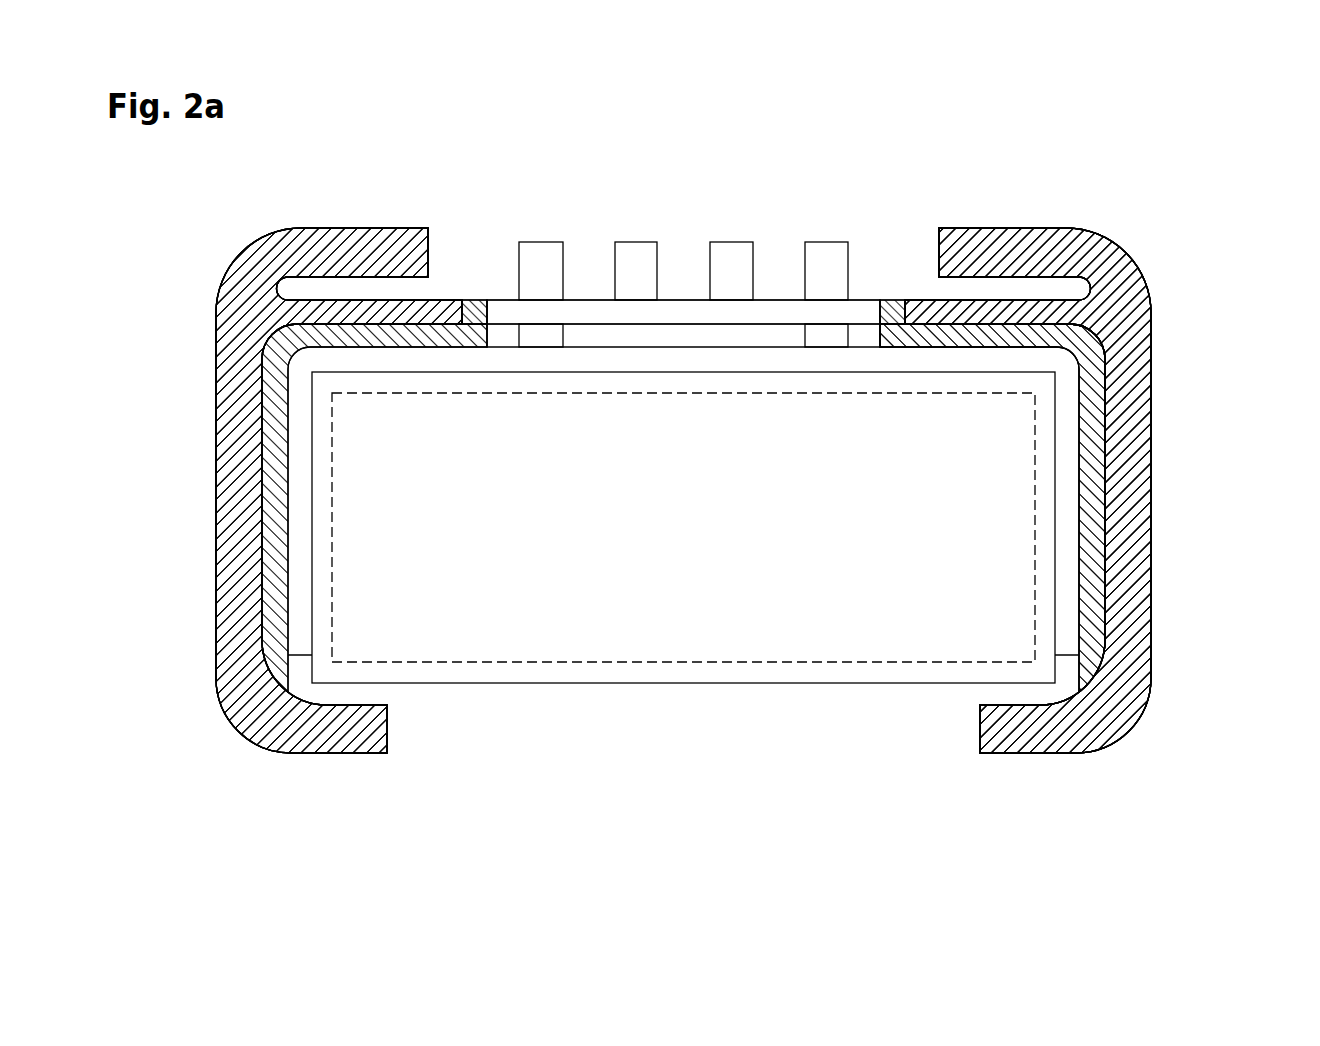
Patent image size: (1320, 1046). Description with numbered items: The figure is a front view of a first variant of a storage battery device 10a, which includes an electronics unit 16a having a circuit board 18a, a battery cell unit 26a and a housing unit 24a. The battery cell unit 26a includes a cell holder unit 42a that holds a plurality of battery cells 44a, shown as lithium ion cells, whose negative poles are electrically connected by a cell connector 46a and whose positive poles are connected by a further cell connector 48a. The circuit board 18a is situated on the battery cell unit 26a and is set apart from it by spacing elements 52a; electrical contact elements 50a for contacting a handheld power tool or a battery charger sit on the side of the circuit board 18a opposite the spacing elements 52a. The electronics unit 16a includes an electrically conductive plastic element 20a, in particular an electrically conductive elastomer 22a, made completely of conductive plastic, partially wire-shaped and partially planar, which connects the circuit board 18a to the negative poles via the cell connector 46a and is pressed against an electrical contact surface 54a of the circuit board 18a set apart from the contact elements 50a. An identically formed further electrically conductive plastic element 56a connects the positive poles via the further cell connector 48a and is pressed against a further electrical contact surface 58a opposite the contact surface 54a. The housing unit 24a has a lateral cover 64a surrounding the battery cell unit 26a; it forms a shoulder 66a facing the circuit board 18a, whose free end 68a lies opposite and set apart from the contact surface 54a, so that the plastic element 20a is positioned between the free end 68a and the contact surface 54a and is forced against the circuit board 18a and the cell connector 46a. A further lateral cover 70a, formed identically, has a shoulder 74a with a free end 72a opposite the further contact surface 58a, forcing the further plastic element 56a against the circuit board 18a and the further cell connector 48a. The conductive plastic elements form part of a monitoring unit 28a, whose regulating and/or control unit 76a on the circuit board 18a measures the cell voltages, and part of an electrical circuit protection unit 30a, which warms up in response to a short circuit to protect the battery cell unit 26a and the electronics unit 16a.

The storage battery device 10a is at (908, 228).
The electronics unit 16a is at (1118, 218).
The circuit board 18a is at (782, 313).
The electrically conductive plastic element 20a is at (1092, 523).
The electrically conductive elastomer 22a is at (1092, 523).
The housing unit 24a is at (1195, 558).
The battery cell unit 26a is at (807, 753).
The monitoring unit 28a is at (793, 193).
The electrical circuit protection unit 30a is at (1197, 303).
The cell holder unit 42a is at (705, 685).
The battery cells 44a is at (623, 618).
The cell connector 46a is at (1067, 430).
The further cell connector 48a is at (298, 603).
The electrical contact elements 50a is at (539, 257).
The spacing elements 52a is at (541, 335).
The electrical contact surface 54a is at (886, 348).
The further electrically conductive plastic element 56a is at (276, 492).
The further electrical contact surface 58a is at (481, 326).
The lateral cover 64a is at (1135, 482).
The shoulder 66a is at (1017, 312).
The free end 68a is at (884, 305).
The further lateral cover 70a is at (228, 548).
The free end 72a is at (471, 303).
The shoulder 74a is at (348, 312).
The regulating and/or control unit 76a is at (673, 313).